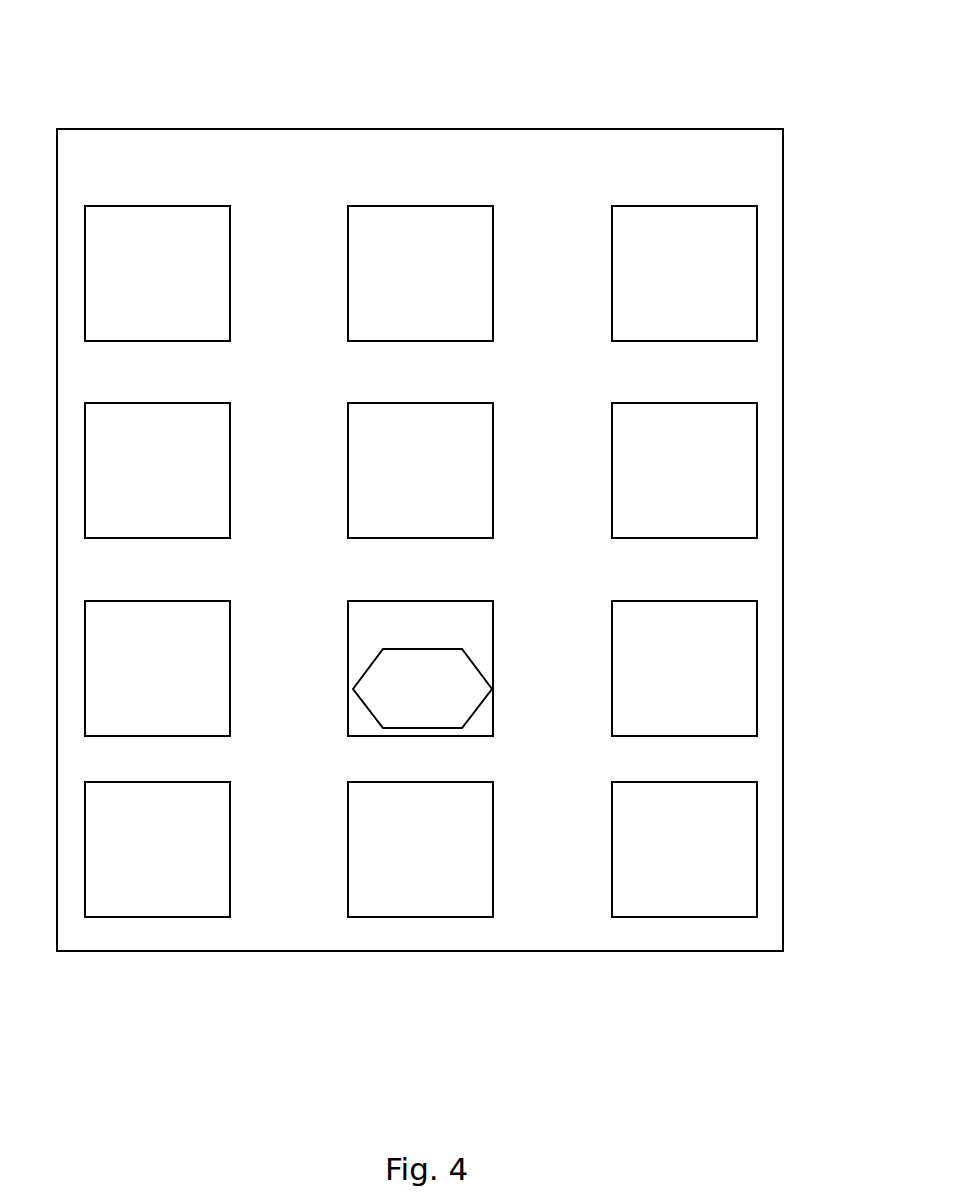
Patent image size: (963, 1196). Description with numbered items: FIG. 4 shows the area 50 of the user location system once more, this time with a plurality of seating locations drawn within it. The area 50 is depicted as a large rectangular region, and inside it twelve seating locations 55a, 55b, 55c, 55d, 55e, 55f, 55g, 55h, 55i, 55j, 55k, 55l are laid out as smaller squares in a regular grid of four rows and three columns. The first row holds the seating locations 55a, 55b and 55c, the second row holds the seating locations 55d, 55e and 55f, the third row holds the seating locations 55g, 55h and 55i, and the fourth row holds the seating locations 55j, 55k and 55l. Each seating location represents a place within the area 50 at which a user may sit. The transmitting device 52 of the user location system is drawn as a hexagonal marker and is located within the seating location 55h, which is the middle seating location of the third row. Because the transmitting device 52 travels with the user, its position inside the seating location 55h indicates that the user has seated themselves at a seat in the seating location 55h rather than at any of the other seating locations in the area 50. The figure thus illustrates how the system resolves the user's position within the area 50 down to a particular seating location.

The area 50 is at (118, 68).
The transmitting device 52 is at (403, 705).
The seating location 55a is at (230, 231).
The seating location 55b is at (493, 231).
The seating location 55c is at (757, 231).
The seating location 55d is at (230, 428).
The seating location 55e is at (493, 428).
The seating location 55f is at (757, 428).
The seating location 55g is at (230, 626).
The seating location 55h is at (493, 626).
The seating location 55i is at (757, 626).
The seating location 55j is at (230, 807).
The seating location 55k is at (493, 807).
The seating location 55l is at (757, 807).